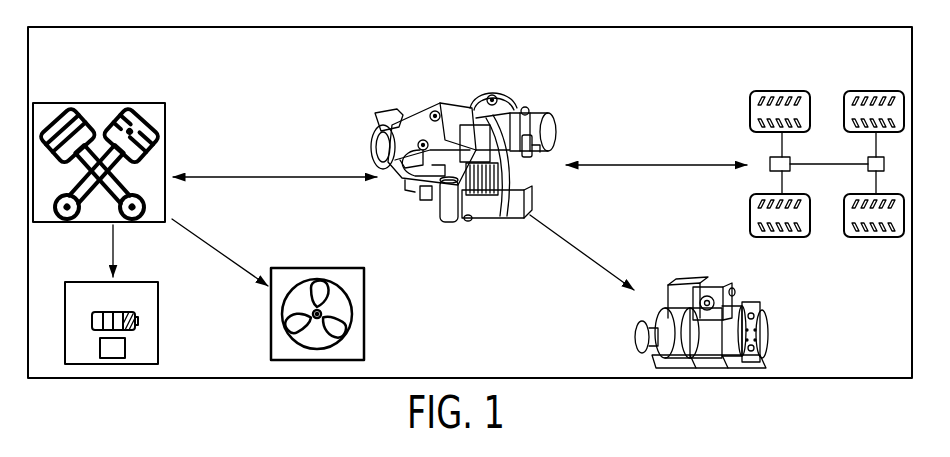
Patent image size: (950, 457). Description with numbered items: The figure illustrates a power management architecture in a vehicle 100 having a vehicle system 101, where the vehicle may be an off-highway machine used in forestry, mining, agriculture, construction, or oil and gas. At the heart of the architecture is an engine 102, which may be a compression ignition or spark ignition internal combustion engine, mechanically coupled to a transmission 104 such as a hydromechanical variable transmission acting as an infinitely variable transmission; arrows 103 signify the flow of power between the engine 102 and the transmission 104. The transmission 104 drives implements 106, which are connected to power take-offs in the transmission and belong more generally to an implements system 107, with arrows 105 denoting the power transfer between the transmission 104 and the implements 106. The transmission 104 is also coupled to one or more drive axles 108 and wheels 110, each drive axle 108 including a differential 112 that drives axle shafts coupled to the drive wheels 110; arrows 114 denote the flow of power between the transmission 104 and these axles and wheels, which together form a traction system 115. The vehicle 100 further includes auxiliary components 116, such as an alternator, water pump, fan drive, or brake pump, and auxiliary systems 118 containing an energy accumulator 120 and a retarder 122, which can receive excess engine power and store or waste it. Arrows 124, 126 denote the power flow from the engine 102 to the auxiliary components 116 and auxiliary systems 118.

The vehicle 100 is at (33, 27).
The vehicle system 101 is at (797, 134).
The engine 102 is at (37, 103).
The arrows 103 is at (231, 178).
The transmission 104 is at (571, 122).
The arrows 105 is at (584, 234).
The implements 106 is at (776, 318).
The implements system 107 is at (830, 337).
The drive axles 108 is at (750, 151).
The wheels 110 is at (749, 100).
The differential 112 is at (771, 169).
The arrows 114 is at (648, 167).
The traction system 115 is at (834, 256).
The auxiliary components 116 is at (390, 291).
The auxiliary systems 118 is at (135, 322).
The energy accumulator 120 is at (122, 312).
The retarder 122 is at (125, 346).
The arrows 124 is at (223, 254).
The arrows 126 is at (113, 238).